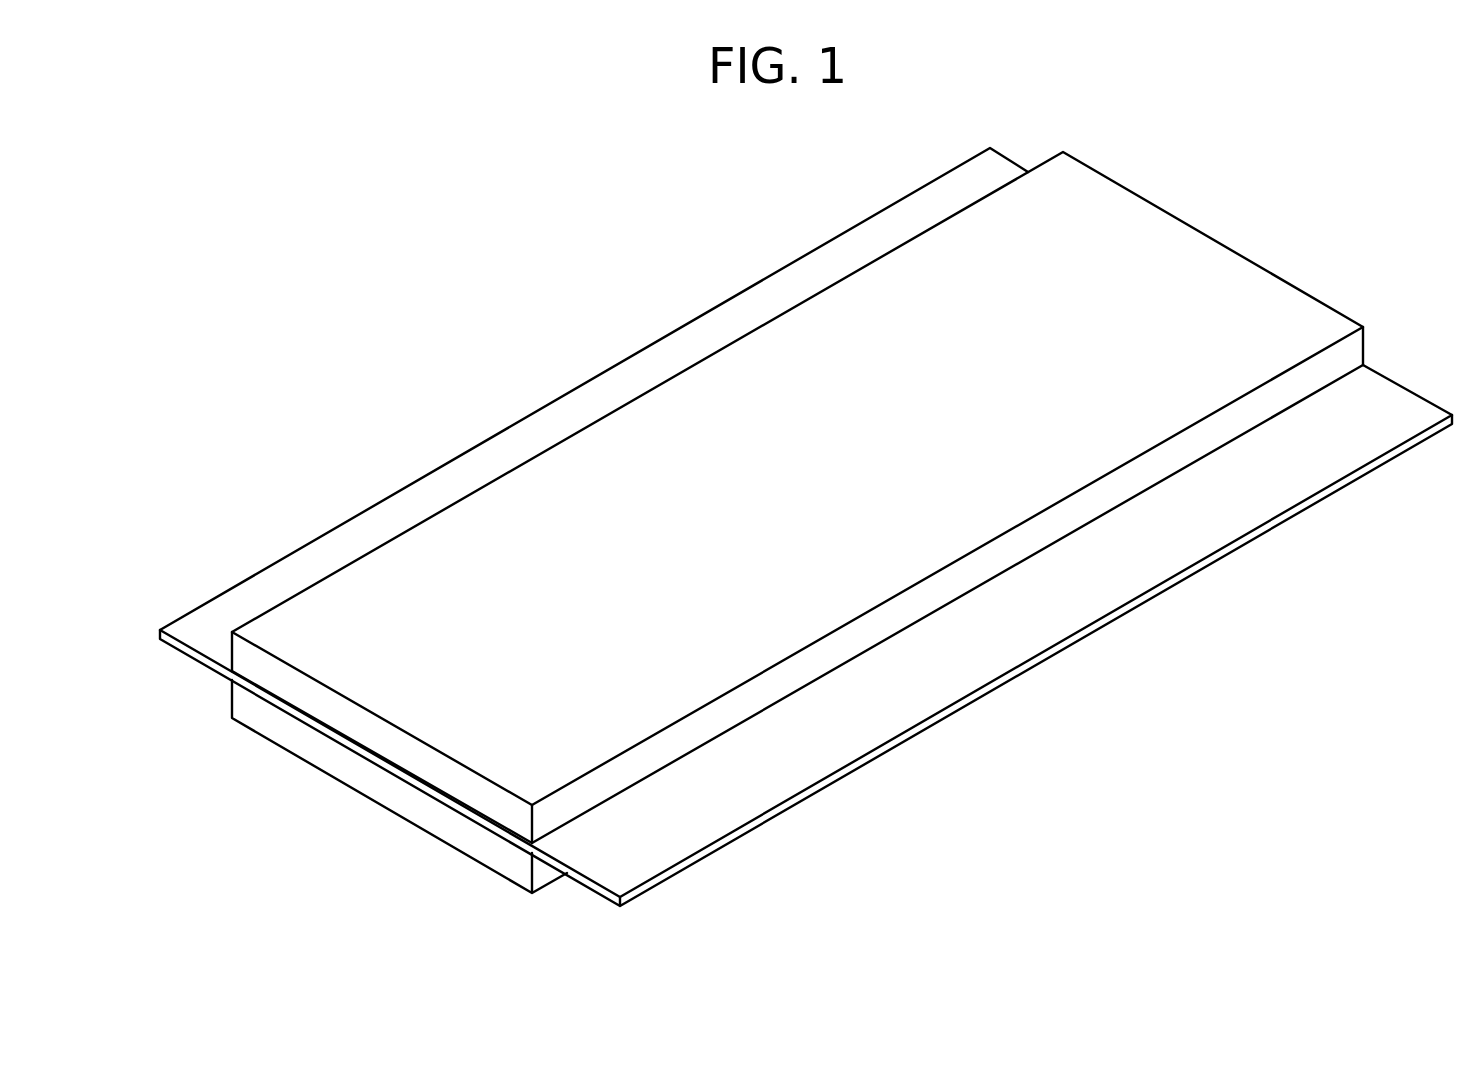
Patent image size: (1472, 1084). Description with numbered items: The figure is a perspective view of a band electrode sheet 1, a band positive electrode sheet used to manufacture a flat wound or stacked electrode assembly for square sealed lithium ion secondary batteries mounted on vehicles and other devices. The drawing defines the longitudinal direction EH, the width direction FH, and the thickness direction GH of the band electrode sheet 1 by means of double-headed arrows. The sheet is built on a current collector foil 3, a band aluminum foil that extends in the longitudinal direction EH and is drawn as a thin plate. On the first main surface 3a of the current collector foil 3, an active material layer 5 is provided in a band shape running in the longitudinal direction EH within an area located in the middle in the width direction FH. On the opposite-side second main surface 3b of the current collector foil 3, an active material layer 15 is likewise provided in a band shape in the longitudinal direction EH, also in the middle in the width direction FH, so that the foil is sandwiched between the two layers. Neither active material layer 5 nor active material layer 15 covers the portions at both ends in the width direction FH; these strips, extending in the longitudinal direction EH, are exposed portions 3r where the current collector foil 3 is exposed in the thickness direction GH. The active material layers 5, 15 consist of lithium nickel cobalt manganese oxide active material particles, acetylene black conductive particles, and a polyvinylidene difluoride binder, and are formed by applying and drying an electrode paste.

The band electrode sheet 1 is at (395, 413).
The current collector foil 3 is at (806, 556).
The first main surface 3a is at (1043, 622).
The second main surface 3b is at (580, 882).
The exposed portions 3r is at (713, 327).
The active material layer 5 is at (872, 315).
The active material layer 15 is at (392, 798).
The longitudinal direction EH is at (585, 322).
The width direction FH is at (308, 885).
The thickness direction GH is at (125, 582).